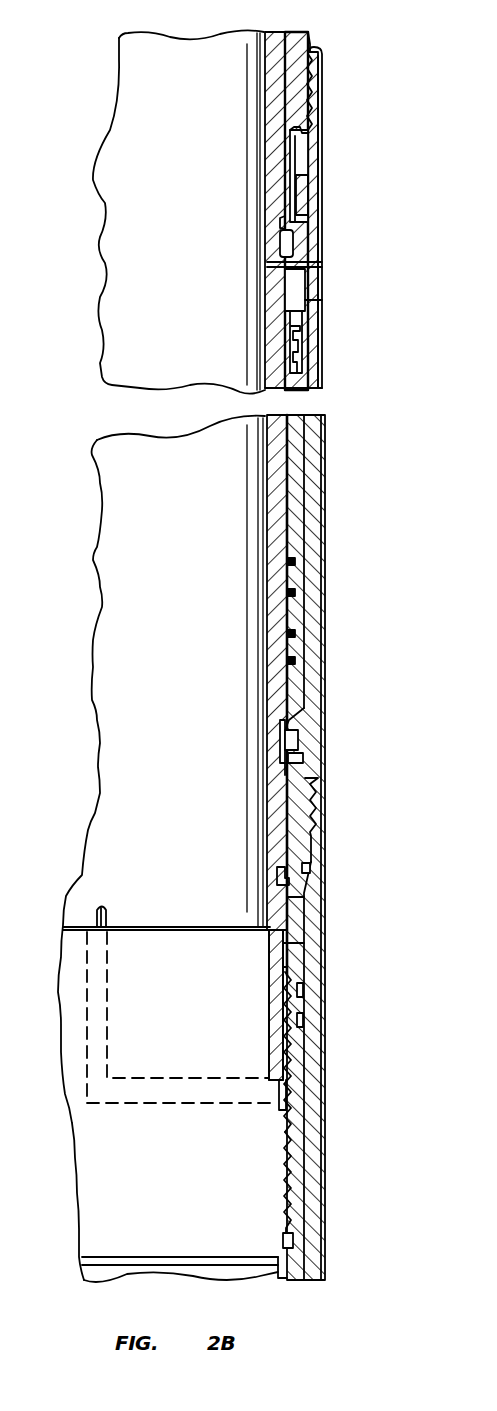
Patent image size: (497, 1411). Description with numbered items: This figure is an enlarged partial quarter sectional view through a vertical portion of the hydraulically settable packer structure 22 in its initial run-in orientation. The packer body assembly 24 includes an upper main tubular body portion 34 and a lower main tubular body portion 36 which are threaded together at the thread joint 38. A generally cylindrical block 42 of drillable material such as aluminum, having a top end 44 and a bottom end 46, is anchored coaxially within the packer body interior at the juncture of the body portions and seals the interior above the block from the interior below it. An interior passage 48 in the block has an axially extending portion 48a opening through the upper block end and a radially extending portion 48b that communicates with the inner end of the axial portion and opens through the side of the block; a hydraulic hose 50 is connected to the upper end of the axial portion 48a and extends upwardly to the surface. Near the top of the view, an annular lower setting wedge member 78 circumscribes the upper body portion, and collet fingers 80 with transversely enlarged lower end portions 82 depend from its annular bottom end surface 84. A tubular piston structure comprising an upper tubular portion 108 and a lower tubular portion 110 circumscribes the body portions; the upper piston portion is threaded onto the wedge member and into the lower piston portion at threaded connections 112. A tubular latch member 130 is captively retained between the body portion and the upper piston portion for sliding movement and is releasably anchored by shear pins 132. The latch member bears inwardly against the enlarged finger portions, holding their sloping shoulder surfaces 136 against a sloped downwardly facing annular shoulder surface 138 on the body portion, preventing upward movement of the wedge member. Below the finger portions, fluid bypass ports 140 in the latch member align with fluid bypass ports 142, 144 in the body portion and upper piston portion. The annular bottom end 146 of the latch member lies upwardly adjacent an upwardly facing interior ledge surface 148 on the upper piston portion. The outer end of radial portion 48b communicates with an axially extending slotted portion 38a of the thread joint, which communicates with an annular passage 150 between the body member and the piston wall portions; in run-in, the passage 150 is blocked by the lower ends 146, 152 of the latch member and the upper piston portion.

The hydraulically settable packer structure 22 is at (185, 16).
The packer body assembly 24 is at (336, 458).
The upper main tubular body portion 34 is at (272, 70).
The lower main tubular body portion 36 is at (292, 1172).
The thread joint 38 is at (282, 999).
The axially extending slotted portion of the thread joint 38a is at (290, 1063).
The block of drillable material 42 is at (187, 1209).
The top end of the block 44 is at (154, 927).
The bottom end of the block 46 is at (193, 1267).
The interior passage 48 is at (106, 1010).
The axially extending passage portion 48a is at (86, 966).
The radially extending passage portion 48b is at (198, 1104).
The hydraulic hose 50 is at (104, 906).
The lower setting wedge member 78 is at (306, 42).
The collet fingers 80 is at (292, 191).
The enlarged lower end portions of the collet fingers 82 is at (284, 250).
The annular bottom end surface of the lower setting wedge member 84 is at (292, 142).
The upper tubular piston portion 108 is at (312, 516).
The lower tubular piston portion 110 is at (322, 1013).
The threaded connection 112 is at (320, 84).
The tubular latch member 130 is at (288, 476).
The shear pins 132 is at (299, 738).
The sloping shoulder surfaces 136 is at (282, 226).
The downwardly facing annular shoulder surface 138 is at (300, 243).
The fluid bypass ports 140 is at (305, 290).
The fluid bypass ports 142 is at (270, 290).
The fluid bypass ports 144 is at (318, 300).
The annular bottom end of the latch member 146 is at (282, 742).
The upwardly facing annular interior ledge surface 148 is at (304, 760).
The annular passage 150 is at (282, 298).
The lower end of the upper piston structure portion 152 is at (310, 886).